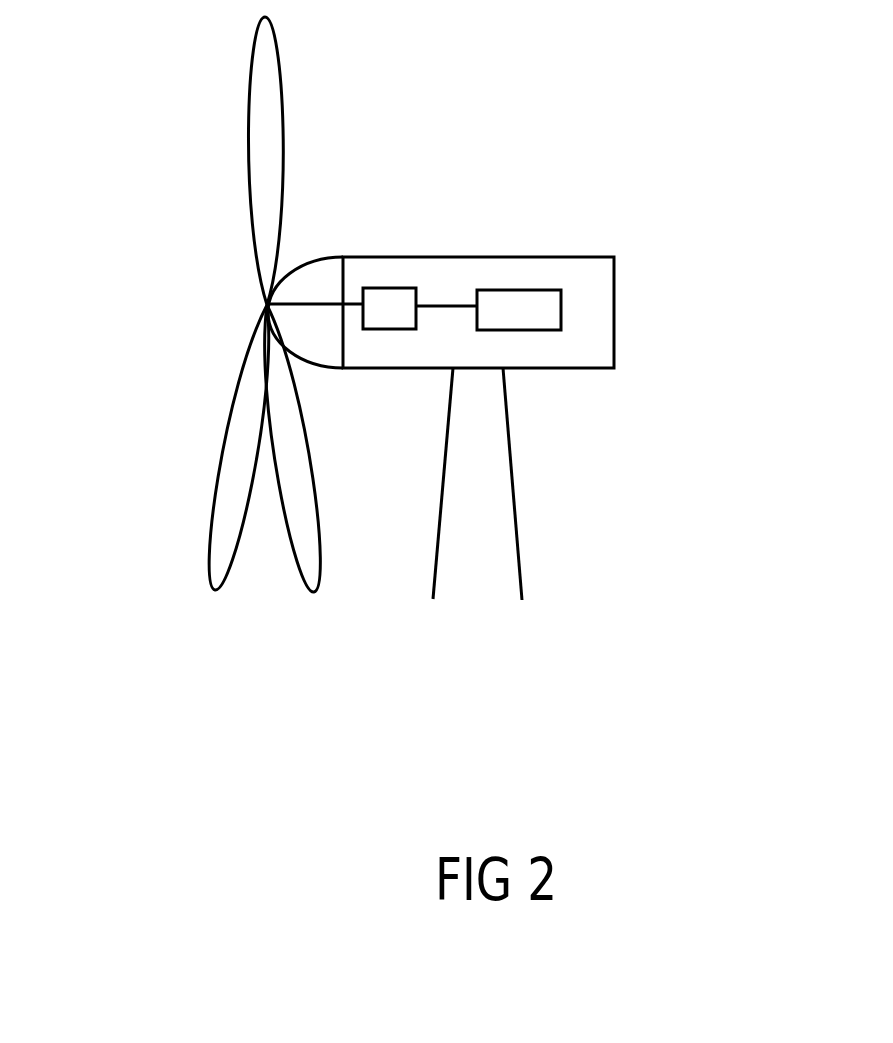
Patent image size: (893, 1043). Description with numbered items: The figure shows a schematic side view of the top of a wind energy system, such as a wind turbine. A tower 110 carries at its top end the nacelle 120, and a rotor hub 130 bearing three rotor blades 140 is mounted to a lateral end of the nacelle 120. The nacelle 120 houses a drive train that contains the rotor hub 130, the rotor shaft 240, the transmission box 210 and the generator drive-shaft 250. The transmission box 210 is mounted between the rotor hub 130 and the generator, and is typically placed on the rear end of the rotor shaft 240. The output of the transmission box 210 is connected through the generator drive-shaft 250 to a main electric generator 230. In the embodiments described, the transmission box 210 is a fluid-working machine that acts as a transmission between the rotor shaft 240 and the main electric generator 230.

The tower 110 is at (500, 570).
The nacelle 120 is at (615, 295).
The rotor hub 130 is at (322, 258).
The rotor blades 140 is at (247, 191).
The transmission box 210 is at (395, 282).
The main electric generator 230 is at (543, 283).
The rotor shaft 240 is at (310, 305).
The generator drive-shaft 250 is at (442, 307).